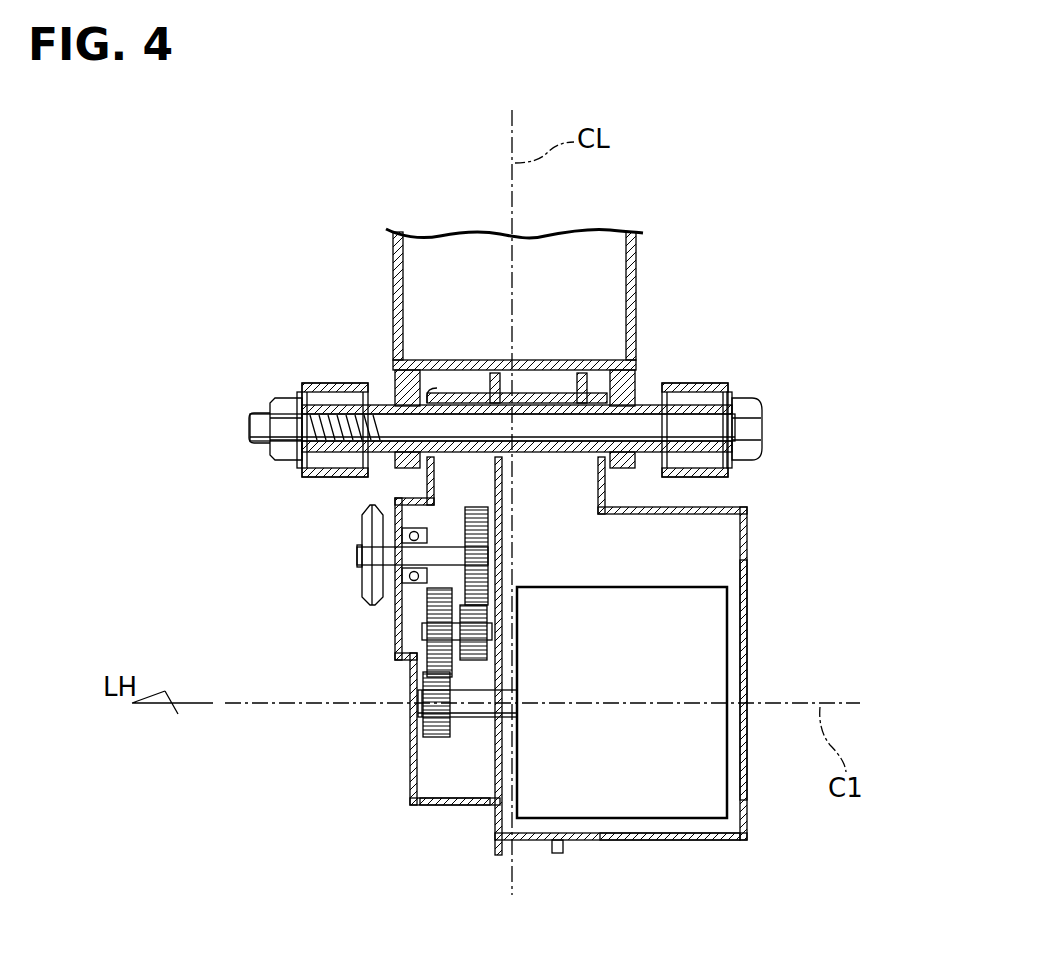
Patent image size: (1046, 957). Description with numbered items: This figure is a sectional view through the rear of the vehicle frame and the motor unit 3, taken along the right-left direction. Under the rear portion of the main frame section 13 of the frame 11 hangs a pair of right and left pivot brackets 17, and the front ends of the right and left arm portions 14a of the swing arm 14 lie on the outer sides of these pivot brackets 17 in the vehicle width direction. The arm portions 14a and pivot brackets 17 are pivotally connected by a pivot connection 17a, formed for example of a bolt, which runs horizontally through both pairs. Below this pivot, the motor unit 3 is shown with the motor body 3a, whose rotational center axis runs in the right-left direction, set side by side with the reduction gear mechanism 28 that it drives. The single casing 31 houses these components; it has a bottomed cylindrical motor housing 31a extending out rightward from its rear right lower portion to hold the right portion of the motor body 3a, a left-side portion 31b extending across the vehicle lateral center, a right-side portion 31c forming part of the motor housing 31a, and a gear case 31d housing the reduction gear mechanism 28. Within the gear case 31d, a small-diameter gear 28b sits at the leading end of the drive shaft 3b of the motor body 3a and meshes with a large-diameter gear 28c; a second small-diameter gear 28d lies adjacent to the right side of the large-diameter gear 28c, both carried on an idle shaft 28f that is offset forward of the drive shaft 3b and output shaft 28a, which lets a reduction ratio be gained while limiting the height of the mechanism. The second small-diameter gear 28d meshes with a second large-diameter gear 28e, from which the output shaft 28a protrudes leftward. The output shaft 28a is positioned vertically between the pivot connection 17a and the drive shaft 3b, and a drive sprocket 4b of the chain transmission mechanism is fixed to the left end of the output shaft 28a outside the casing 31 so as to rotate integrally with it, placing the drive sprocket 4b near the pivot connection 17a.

The motor unit 3 is at (642, 693).
The motor body 3a is at (707, 622).
The drive shaft 3b is at (478, 710).
The drive sprocket 4b is at (372, 585).
The frame 11 is at (572, 299).
The main frame section 13 is at (632, 300).
The swing arm 14 is at (530, 377).
The arm portions 14a is at (316, 383).
The pivot brackets 17 is at (394, 386).
The pivot connection 17a is at (750, 432).
The reduction gear mechanism 28 is at (420, 634).
The output shaft 28a is at (388, 552).
The small-diameter gear 28b is at (425, 727).
The large-diameter gear 28c is at (432, 603).
The second small-diameter gear 28d is at (487, 650).
The second large-diameter gear 28e is at (489, 541).
The idle shaft 28f is at (492, 630).
The casing 31 is at (642, 693).
The motor housing 31a is at (748, 672).
The left-side portion 31b is at (540, 842).
The right-side portion 31c is at (655, 841).
The gear case 31d is at (446, 806).